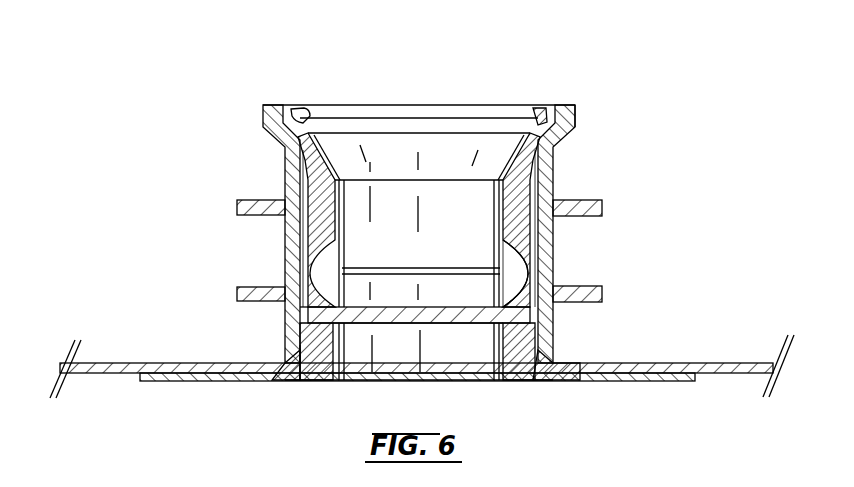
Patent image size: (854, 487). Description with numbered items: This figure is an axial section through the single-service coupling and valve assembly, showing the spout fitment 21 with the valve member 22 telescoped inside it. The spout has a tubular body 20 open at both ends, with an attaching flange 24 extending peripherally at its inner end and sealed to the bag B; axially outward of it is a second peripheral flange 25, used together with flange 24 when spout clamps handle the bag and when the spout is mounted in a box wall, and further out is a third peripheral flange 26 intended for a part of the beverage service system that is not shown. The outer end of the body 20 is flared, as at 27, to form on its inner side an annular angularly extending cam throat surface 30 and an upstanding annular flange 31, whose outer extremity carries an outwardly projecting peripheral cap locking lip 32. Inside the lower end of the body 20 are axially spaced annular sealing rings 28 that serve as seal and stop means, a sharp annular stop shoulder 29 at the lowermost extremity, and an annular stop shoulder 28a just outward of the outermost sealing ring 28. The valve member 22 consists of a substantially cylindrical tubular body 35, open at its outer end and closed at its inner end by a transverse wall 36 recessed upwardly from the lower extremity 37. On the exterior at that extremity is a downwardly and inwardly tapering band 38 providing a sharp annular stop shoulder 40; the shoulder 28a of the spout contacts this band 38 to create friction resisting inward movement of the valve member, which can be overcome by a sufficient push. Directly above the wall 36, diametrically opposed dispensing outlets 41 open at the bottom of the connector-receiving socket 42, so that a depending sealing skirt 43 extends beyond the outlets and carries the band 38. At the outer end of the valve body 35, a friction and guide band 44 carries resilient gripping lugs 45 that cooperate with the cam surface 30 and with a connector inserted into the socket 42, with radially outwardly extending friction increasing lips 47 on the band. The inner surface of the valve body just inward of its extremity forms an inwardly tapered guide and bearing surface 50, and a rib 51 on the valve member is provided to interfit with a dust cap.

The tubular body 20 is at (292, 257).
The spout fitment 21 is at (560, 172).
The valve member 22 is at (310, 223).
The attaching flange 24 is at (178, 381).
The second peripheral flange 25 is at (602, 294).
The third peripheral flange 26 is at (602, 204).
The flared end 27 is at (270, 130).
The annular sealing ring 28 is at (533, 347).
The annular stop shoulder 28a is at (300, 308).
The annular stop shoulder 29 is at (533, 380).
The cam throat surface 30 is at (542, 117).
The upstanding annular flange 31 is at (390, 110).
The cap locking lip 32 is at (570, 112).
The tubular body 35 is at (407, 242).
The transverse wall 36 is at (400, 312).
The lower extremity 37 is at (513, 380).
The tapering band 38 is at (303, 354).
The annular stop shoulder 40 is at (307, 357).
The dispensing outlet 41 is at (512, 278).
The connector-receiving socket 42 is at (468, 193).
The sealing skirt 43 is at (502, 330).
The friction and guide band 44 is at (300, 163).
The gripping lug 45 is at (298, 106).
The friction increasing lip 47 is at (443, 132).
The guide and bearing surface 50 is at (376, 152).
The rib 51 is at (465, 272).
The bag B is at (722, 360).